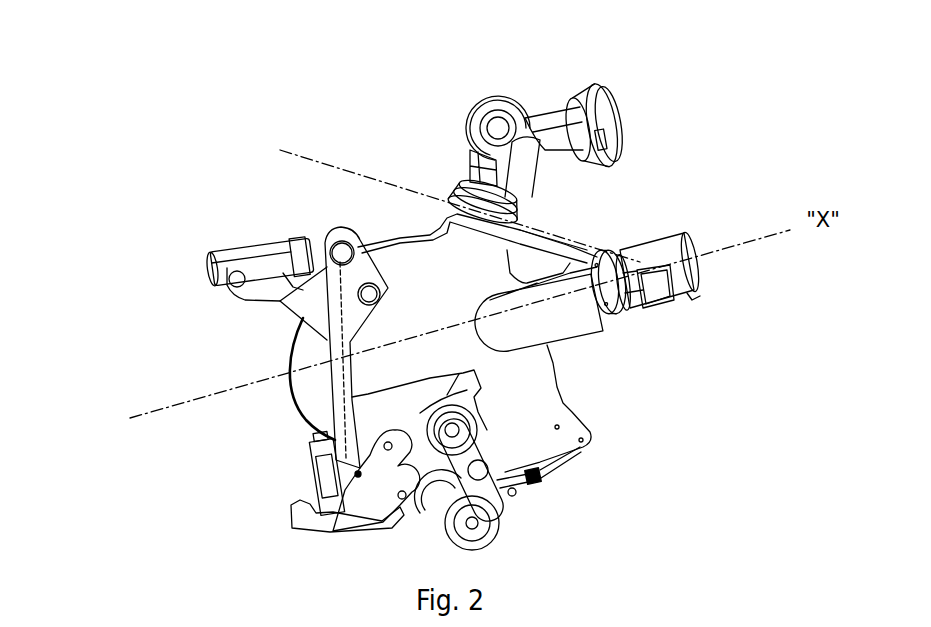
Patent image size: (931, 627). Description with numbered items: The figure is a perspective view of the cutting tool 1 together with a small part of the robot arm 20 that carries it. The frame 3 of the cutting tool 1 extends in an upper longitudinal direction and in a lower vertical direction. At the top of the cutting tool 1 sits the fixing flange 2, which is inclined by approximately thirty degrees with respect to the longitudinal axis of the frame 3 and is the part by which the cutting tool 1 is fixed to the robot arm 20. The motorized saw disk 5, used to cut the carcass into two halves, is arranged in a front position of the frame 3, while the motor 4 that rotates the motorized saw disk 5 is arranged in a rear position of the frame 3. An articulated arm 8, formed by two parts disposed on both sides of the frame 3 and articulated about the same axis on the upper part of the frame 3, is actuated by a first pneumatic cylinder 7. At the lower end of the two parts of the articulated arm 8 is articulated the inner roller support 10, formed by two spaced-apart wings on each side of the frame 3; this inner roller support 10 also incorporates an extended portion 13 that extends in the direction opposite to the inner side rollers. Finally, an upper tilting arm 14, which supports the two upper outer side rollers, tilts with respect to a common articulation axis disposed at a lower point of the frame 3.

The cutting tool 1 is at (261, 161).
The fixing flange 2 is at (443, 187).
The frame 3 is at (584, 407).
The motor 4 is at (708, 240).
The motorized saw disk 5 is at (285, 389).
The first pneumatic cylinder 7 is at (227, 243).
The articulated arm 8 is at (325, 348).
The inner roller support 10 is at (357, 494).
The extended portion 13 is at (283, 517).
The upper tilting arm 14 is at (453, 462).
The robot arm 20 is at (512, 68).